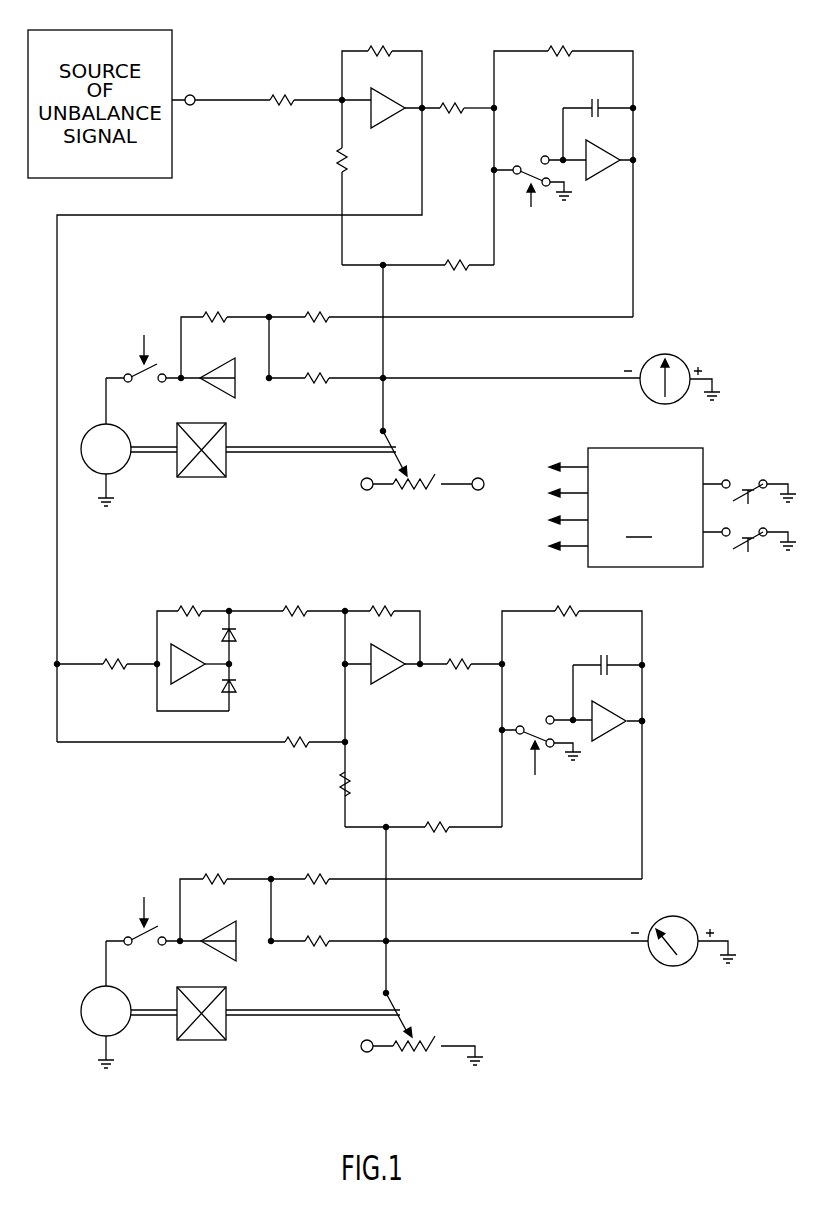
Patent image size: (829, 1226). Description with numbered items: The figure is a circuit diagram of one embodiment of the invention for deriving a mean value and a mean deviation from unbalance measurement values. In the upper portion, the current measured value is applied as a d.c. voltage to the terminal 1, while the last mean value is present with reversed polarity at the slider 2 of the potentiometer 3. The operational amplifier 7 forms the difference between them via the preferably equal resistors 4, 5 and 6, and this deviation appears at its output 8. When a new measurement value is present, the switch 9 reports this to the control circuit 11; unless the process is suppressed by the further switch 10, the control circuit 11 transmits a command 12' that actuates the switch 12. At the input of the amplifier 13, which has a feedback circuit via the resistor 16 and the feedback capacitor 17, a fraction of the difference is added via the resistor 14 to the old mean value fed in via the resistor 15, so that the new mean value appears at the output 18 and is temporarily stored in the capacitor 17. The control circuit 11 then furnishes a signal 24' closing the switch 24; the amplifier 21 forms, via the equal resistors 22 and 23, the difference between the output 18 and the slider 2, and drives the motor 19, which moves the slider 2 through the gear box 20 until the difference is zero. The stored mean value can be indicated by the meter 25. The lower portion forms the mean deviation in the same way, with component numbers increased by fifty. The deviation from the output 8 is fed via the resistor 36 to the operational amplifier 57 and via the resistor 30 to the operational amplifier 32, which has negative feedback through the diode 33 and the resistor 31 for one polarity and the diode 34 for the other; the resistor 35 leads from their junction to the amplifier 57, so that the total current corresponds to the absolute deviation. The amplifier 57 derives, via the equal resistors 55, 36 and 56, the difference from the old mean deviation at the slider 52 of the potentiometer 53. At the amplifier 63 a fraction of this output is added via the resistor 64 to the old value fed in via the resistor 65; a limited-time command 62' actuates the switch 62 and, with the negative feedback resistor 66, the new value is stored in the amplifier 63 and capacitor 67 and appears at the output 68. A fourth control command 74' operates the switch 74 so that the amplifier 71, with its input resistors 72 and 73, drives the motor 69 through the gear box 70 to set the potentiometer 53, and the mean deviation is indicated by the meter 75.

The terminal 1 is at (192, 96).
The slider 2 is at (404, 459).
The potentiometer 3 is at (426, 483).
The resistor 4 is at (286, 98).
The resistor 5 is at (348, 159).
The resistor 6 is at (385, 49).
The operational amplifier 7 is at (382, 97).
The output 8 is at (423, 111).
The switch 9 is at (742, 490).
The switch 10 is at (746, 536).
The control circuit 11 is at (610, 507).
The switch 12 is at (531, 165).
The command 12' is at (537, 209).
The amplifier 13 is at (597, 181).
The resistor 14 is at (452, 105).
The resistor 15 is at (449, 263).
The resistor 16 is at (560, 51).
The feedback capacitor 17 is at (594, 99).
The output 18 is at (636, 161).
The motor 19 is at (98, 425).
The gear box 20 is at (228, 443).
The amplifier 21 is at (225, 360).
The resistor 22 is at (316, 317).
The resistor 23 is at (316, 377).
The switch 24 is at (143, 394).
The signal 24' is at (146, 337).
The meter 25 is at (672, 358).
The resistor 30 is at (108, 663).
The resistor 31 is at (187, 612).
The operational amplifier 32 is at (191, 676).
The diode 33 is at (237, 634).
The diode 34 is at (237, 686).
The resistor 35 is at (295, 613).
The resistor 36 is at (295, 742).
The slider 52 is at (402, 1015).
The potentiometer 53 is at (432, 1044).
The resistor 55 is at (351, 783).
The resistor 56 is at (378, 612).
The operational amplifier 57 is at (384, 682).
The switch 62 is at (540, 727).
The command 62' is at (535, 773).
The amplifier 63 is at (612, 739).
The resistor 64 is at (450, 661).
The resistor 65 is at (436, 826).
The negative feedback resistor 66 is at (573, 613).
The capacitor 67 is at (602, 654).
The output 68 is at (645, 722).
The motor 69 is at (93, 990).
The gear box 70 is at (228, 1007).
The amplifier 71 is at (225, 920).
The resistor 72 is at (312, 878).
The resistor 73 is at (313, 941).
The switch 74 is at (143, 956).
The control command 74' is at (148, 899).
The meter 75 is at (673, 918).